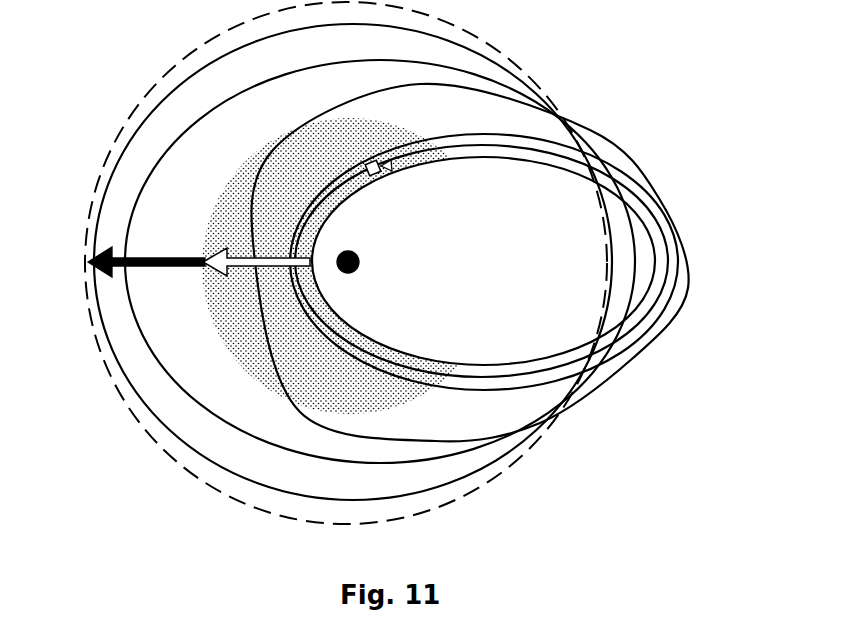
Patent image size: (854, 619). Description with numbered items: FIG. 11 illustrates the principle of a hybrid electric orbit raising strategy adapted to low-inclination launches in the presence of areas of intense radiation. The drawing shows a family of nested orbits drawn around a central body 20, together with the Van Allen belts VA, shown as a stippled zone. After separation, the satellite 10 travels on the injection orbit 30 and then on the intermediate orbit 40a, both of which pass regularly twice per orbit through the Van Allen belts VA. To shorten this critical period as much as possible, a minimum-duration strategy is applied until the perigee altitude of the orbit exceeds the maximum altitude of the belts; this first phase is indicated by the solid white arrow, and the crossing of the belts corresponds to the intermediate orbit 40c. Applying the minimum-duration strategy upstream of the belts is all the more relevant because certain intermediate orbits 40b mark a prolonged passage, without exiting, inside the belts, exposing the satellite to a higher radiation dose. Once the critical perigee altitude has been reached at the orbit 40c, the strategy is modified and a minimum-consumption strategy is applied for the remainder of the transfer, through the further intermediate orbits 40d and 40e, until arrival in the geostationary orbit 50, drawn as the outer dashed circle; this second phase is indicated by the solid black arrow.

The satellite 10 is at (389, 162).
The central body 20 is at (356, 270).
The injection orbit 30 is at (655, 250).
The intermediate orbit 40a is at (668, 265).
The intermediate orbits 40b is at (678, 292).
The intermediate orbit 40c is at (633, 358).
The orbit 40d is at (128, 212).
The orbit 40e is at (116, 163).
The geostationary orbit 50 is at (128, 118).
The Van Allen belts VA is at (499, 259).